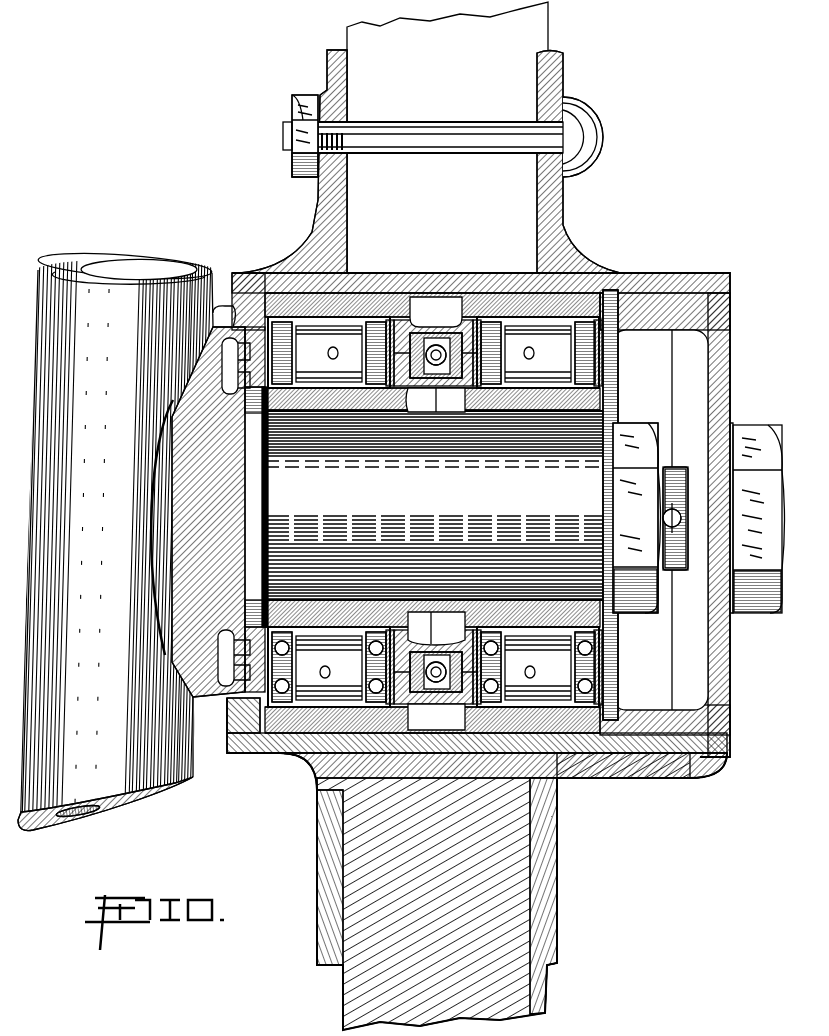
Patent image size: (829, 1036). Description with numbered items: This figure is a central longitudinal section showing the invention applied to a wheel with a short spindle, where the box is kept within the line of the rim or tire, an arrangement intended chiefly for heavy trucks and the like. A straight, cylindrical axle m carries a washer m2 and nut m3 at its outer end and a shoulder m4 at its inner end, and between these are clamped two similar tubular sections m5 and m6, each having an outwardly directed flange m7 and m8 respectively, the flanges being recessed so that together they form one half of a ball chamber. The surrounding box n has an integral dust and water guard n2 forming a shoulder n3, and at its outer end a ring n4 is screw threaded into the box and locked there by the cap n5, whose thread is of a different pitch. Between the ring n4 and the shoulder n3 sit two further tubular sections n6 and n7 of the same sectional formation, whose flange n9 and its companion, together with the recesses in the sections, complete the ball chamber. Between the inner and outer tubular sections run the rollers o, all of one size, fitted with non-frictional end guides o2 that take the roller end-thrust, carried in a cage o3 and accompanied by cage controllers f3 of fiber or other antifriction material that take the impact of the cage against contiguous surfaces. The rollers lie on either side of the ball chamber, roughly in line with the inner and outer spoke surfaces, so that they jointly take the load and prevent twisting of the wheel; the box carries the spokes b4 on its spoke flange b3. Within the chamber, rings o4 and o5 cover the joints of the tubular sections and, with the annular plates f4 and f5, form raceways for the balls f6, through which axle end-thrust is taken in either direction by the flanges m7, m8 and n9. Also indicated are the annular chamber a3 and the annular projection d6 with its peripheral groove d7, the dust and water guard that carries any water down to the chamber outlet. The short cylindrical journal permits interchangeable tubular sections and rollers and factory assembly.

The dust and water guard n2 is at (232, 296).
The shoulder n3 is at (258, 300).
The ring n4 is at (657, 312).
The cap n5 is at (736, 385).
The tubular section n6 is at (330, 302).
The tubular section n7 is at (524, 297).
The flange n9 is at (450, 335).
The box n is at (464, 300).
The cage controller f3 is at (288, 296).
The annular plate f4 is at (428, 655).
The annular plate f5 is at (440, 655).
The balls f6 is at (436, 692).
The spoke flange b3 is at (557, 838).
The spokes b4 is at (522, 896).
The annular chamber a3 is at (222, 362).
The peripheral groove d7 is at (200, 370).
The annular projection d6 is at (190, 388).
The rollers o is at (427, 512).
The non-frictional end guides o2 is at (286, 343).
The cage o3 is at (598, 369).
The ring o4 is at (440, 378).
The ring o5 is at (436, 340).
The straight axle m is at (433, 507).
The washer m2 is at (605, 505).
The nut m3 is at (650, 518).
The shoulder m4 is at (268, 505).
The tubular section m5 is at (335, 410).
The tubular section m6 is at (540, 410).
The flange m7 is at (398, 410).
The flange m8 is at (465, 380).